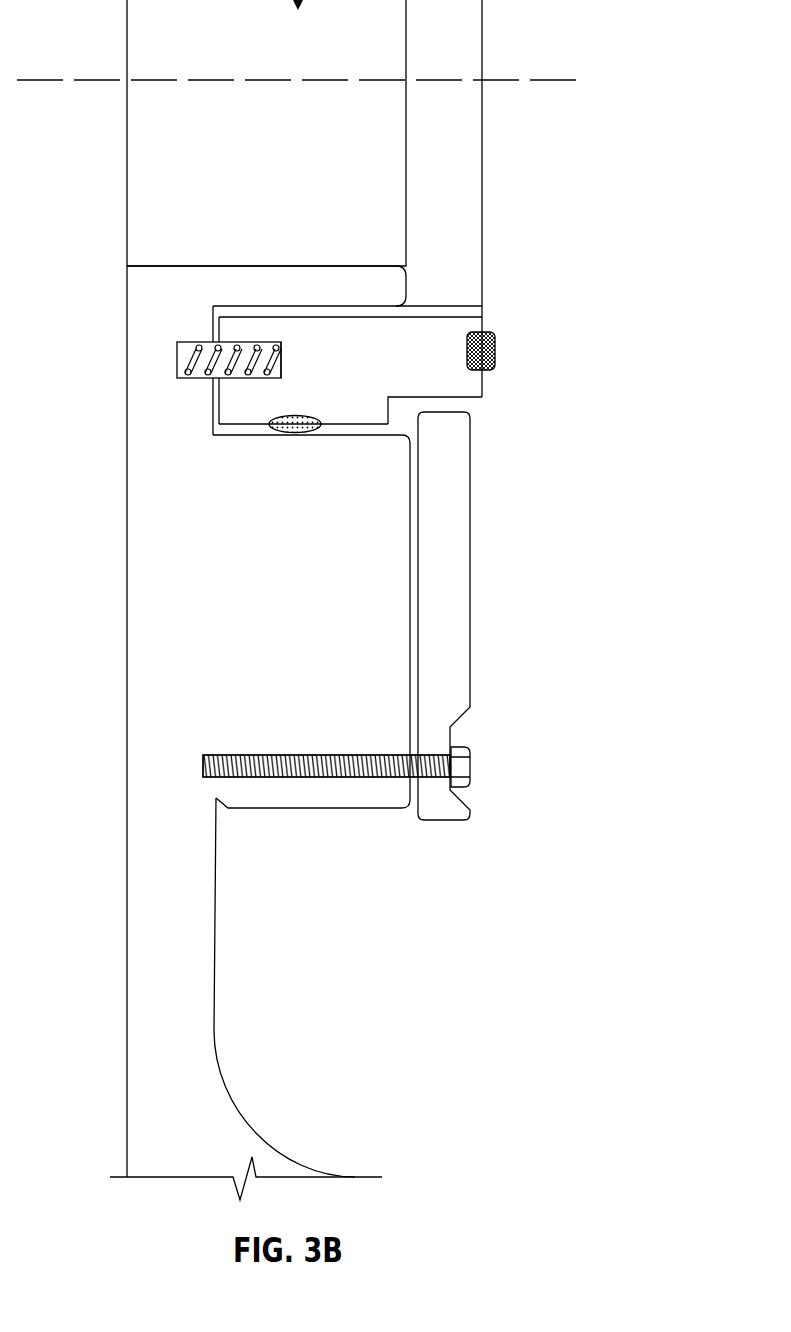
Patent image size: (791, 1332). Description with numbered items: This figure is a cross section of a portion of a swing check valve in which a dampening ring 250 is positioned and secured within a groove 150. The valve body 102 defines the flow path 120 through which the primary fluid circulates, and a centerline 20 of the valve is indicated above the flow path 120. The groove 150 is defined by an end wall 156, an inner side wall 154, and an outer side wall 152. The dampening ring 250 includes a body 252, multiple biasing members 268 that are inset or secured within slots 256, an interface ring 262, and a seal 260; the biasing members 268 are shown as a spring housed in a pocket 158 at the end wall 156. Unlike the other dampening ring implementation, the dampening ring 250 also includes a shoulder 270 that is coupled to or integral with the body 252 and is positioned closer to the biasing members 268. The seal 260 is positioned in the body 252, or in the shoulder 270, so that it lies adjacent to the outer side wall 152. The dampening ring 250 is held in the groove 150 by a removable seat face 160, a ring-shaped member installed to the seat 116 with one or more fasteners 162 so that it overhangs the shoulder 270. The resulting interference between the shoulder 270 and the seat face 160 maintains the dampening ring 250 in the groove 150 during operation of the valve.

The centerline 20 is at (563, 81).
The valve body 102 is at (250, 1098).
The seat 116 is at (394, 828).
The flow path 120 is at (290, 147).
The groove 150 is at (319, 253).
The outer side wall 152 is at (360, 437).
The inner side wall 154 is at (368, 305).
The end wall 156 is at (213, 415).
The spring housing 158 is at (166, 360).
The seat face 160 is at (471, 640).
The fasteners 162 is at (471, 765).
The dampening ring 250 is at (481, 212).
The body 252 is at (450, 330).
The slots 256 is at (283, 360).
The seal 260 is at (293, 434).
The interface ring 262 is at (496, 351).
The biasing members 268 is at (188, 358).
The shoulder 270 is at (393, 408).